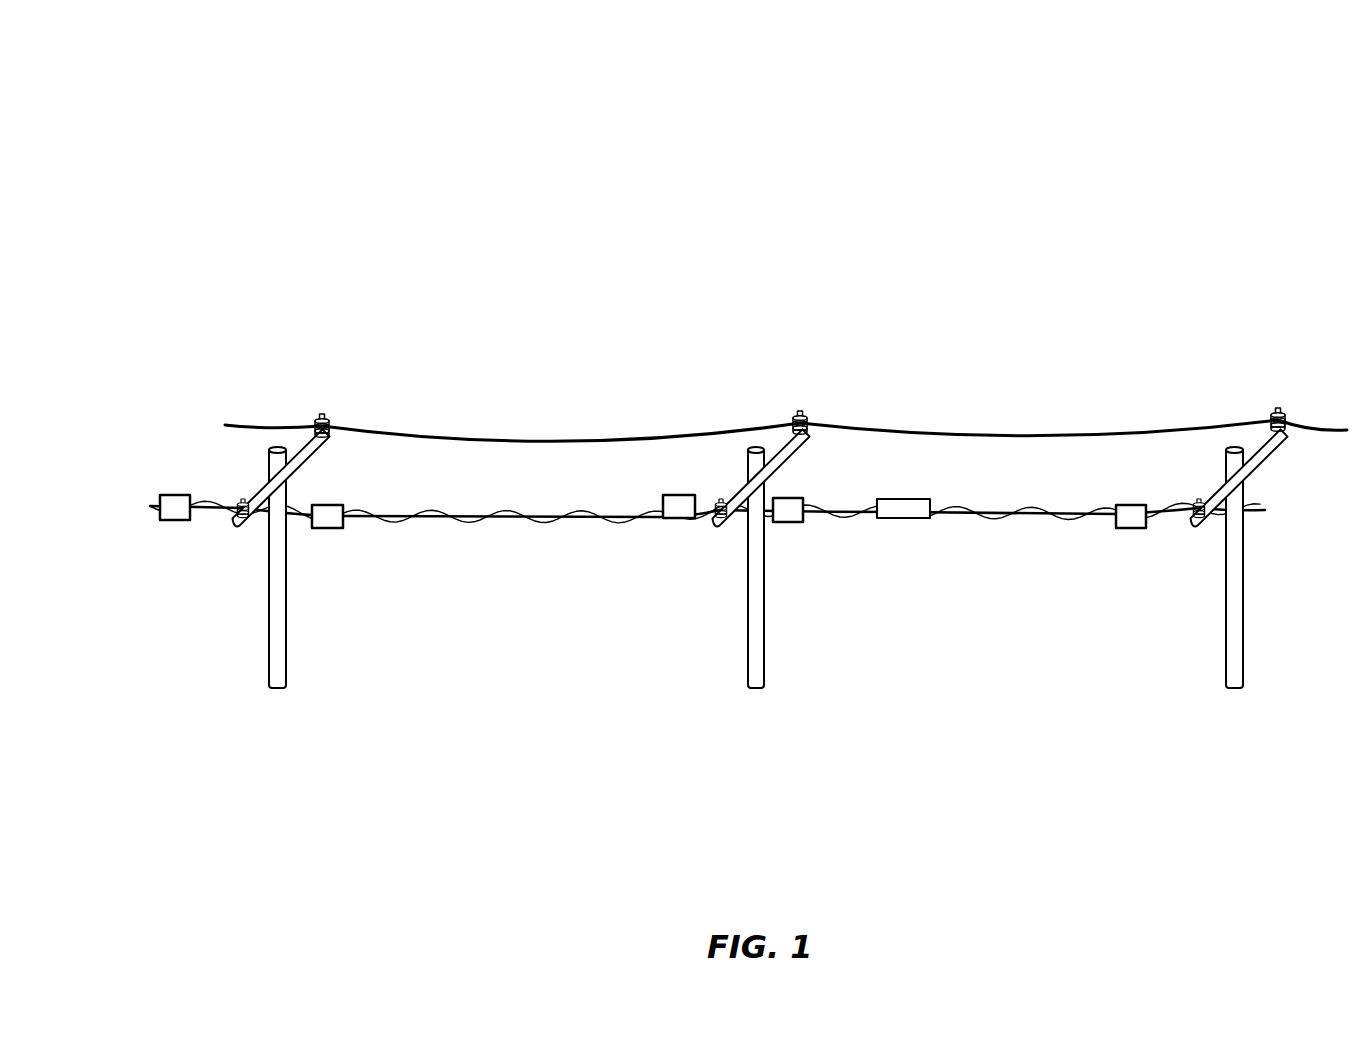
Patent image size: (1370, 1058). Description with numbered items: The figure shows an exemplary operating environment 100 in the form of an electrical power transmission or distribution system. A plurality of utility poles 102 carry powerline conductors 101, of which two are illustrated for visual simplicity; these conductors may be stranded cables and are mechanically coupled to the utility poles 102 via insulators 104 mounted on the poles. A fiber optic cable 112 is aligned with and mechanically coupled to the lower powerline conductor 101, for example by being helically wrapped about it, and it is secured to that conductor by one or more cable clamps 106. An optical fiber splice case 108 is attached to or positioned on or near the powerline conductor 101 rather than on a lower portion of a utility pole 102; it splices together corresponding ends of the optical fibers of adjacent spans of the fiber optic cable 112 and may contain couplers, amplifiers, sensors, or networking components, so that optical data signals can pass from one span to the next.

The operating environment 100 is at (156, 166).
The powerline conductor 101 is at (1108, 437).
The utility pole 102 is at (273, 688).
The insulator 104 is at (322, 415).
The cable clamp 106 is at (1128, 530).
The optical fiber splice case 108 is at (847, 657).
The fiber optic cable 112 is at (434, 523).